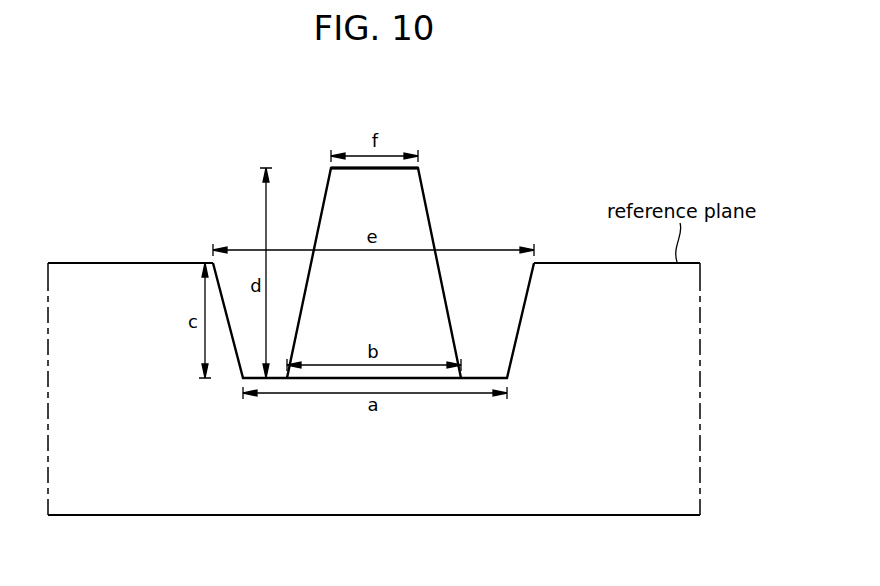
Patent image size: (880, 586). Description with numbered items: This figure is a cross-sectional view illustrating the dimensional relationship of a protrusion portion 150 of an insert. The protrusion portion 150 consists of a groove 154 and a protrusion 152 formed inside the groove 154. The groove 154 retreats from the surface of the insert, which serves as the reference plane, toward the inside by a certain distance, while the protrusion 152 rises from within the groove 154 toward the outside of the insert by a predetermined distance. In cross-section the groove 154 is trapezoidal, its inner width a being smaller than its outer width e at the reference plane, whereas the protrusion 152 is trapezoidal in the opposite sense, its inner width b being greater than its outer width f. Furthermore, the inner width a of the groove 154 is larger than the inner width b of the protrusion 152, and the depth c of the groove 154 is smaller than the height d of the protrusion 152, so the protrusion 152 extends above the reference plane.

The protrusion portion 150 is at (460, 168).
The protrusion 152 is at (407, 199).
The groove 154 is at (484, 290).